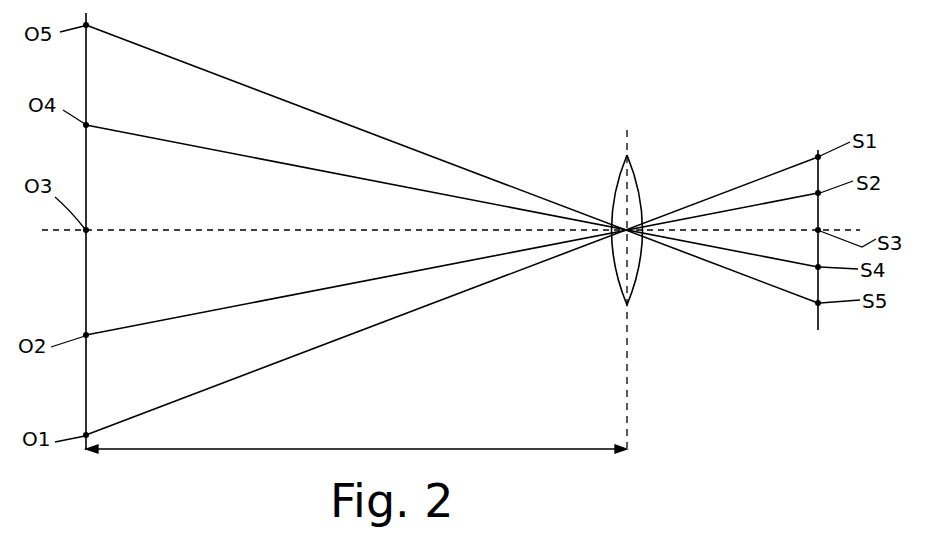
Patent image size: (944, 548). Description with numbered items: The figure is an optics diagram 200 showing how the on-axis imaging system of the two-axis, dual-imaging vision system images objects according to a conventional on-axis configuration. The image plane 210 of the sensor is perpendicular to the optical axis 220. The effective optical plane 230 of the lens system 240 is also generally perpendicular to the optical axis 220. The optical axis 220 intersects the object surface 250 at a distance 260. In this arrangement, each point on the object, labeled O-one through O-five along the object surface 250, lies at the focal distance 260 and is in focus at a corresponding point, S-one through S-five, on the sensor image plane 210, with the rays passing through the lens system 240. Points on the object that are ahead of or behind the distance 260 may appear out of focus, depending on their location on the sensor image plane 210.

The diagram 200 is at (704, 113).
The image plane 210 is at (815, 322).
The optical axis 220 is at (385, 233).
The effective optical plane 230 is at (628, 344).
The lens system 240 is at (636, 175).
The object surface 250 is at (86, 296).
The distance 260 is at (370, 448).